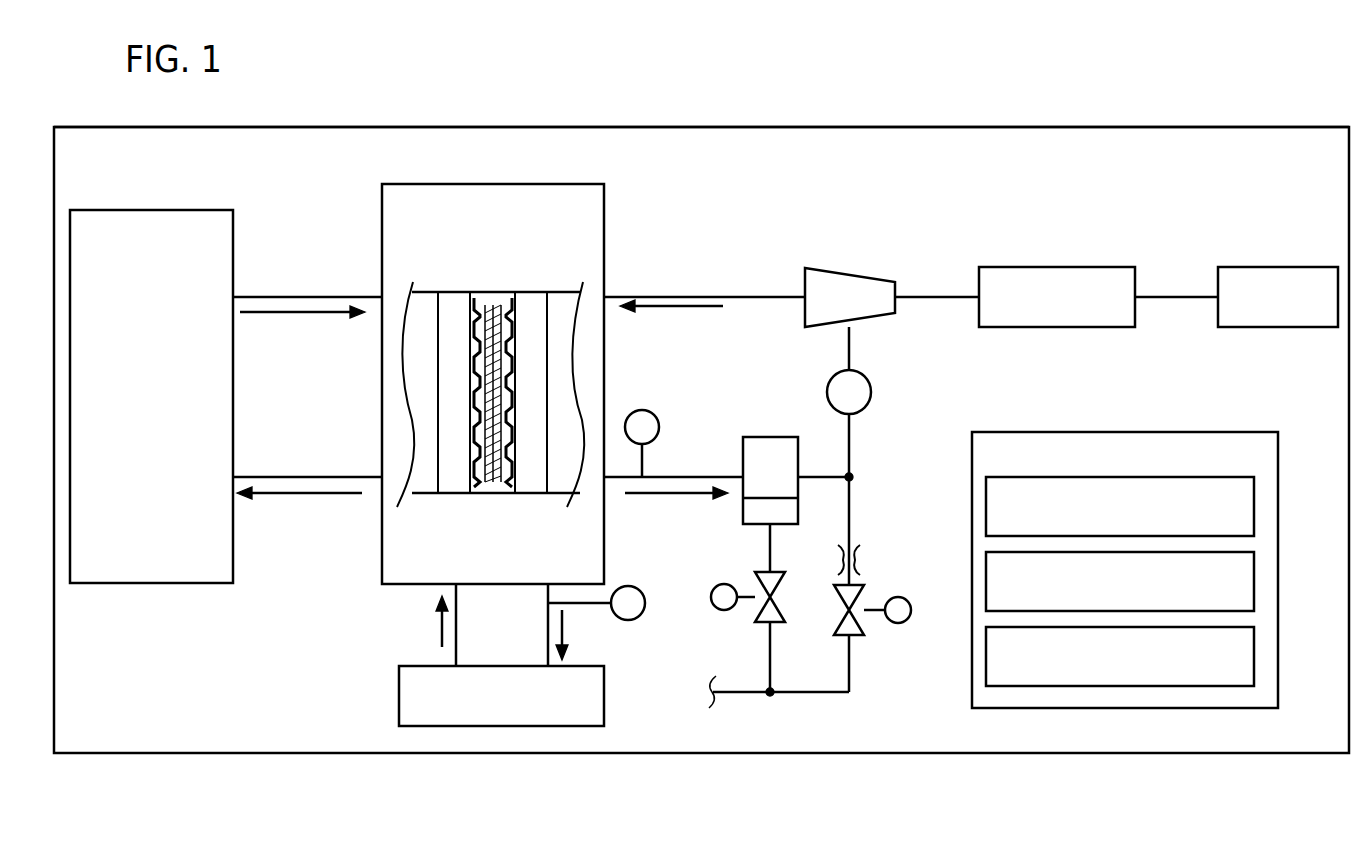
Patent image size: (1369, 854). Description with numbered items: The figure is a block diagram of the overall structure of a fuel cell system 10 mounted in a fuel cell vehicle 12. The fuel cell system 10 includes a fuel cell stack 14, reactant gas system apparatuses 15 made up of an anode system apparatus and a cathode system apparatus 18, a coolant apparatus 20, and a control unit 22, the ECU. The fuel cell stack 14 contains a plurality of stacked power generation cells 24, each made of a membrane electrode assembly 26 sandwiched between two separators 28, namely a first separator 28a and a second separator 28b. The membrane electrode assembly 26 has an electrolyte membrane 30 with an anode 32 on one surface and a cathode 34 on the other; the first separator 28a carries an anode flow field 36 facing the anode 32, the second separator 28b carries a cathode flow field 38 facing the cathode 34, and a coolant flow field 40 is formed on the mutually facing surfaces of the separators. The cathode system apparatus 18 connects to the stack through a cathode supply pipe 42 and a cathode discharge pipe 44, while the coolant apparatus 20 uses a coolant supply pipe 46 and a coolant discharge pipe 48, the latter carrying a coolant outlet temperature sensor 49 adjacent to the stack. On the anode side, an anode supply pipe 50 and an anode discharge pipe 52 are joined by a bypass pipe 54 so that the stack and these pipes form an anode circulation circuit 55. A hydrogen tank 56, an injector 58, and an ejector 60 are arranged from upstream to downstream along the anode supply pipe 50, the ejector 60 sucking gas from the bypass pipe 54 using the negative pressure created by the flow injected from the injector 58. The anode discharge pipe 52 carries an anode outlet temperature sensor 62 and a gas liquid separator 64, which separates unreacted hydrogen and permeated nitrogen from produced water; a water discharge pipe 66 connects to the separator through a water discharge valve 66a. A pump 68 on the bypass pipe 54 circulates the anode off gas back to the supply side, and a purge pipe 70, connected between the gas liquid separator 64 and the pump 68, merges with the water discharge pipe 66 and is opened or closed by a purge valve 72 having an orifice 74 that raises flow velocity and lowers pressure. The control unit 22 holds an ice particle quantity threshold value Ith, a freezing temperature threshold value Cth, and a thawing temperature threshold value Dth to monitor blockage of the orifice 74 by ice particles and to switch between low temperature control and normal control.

The fuel cell system 10 is at (646, 160).
The fuel cell vehicle 12 is at (788, 119).
The fuel cell stack 14 is at (445, 184).
The reactant gas system apparatuses 15 is at (974, 237).
The cathode system apparatus 18 is at (150, 210).
The coolant apparatus 20 is at (398, 697).
The control unit 22 is at (1150, 548).
The power generation cells 24 is at (490, 302).
The membrane electrode assembly 26 is at (498, 441).
The separators 28 is at (420, 358).
The first separator 28a is at (472, 355).
The second separator 28b is at (513, 352).
The electrolyte membrane 30 is at (494, 486).
The anode 32 is at (487, 486).
The cathode 34 is at (520, 421).
The anode flow field 36 is at (473, 397).
The cathode flow field 38 is at (513, 398).
The coolant flow field 40 is at (473, 417).
The cathode supply pipe 42 is at (348, 297).
The cathode discharge pipe 44 is at (274, 477).
The coolant supply pipe 46 is at (458, 599).
The coolant discharge pipe 48 is at (546, 643).
The coolant outlet temperature sensor 49 is at (630, 621).
The anode supply pipe 50 is at (687, 297).
The anode discharge pipe 52 is at (705, 477).
The bypass pipe 54 is at (851, 448).
The anode circulation circuit 55 is at (735, 263).
The hydrogen tank 56 is at (1282, 267).
The injector 58 is at (1077, 267).
The ejector 60 is at (847, 268).
The anode outlet temperature sensor 62 is at (654, 414).
The gas liquid separator 64 is at (766, 437).
The water discharge pipe 66 is at (768, 651).
The water discharge valve 66a is at (713, 587).
The pump 68 is at (872, 392).
The purge pipe 70 is at (801, 692).
The purge valve 72 is at (905, 598).
The orifice 74 is at (858, 557).
The ice particle quantity threshold value Ith is at (1256, 508).
The freezing temperature threshold value Cth is at (1256, 583).
The thawing temperature threshold value Dth is at (1256, 658).